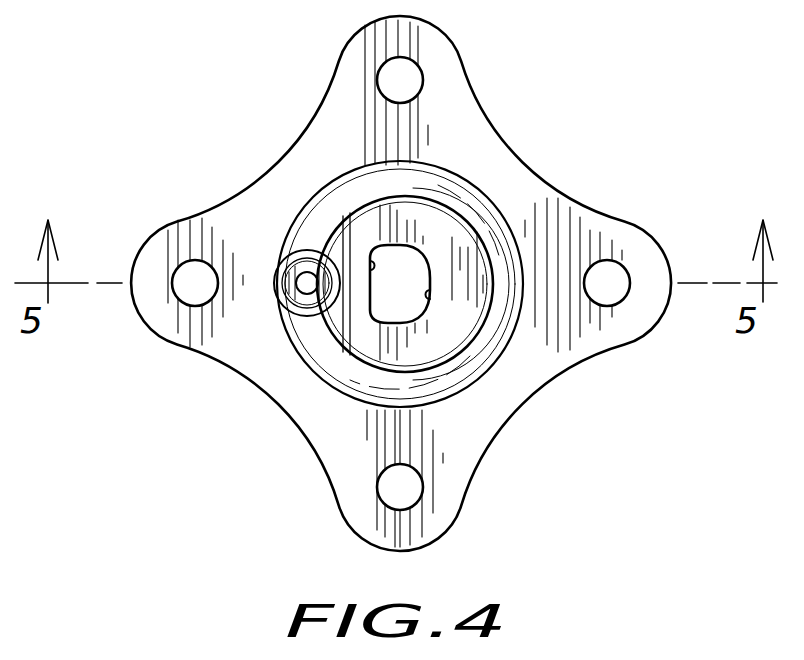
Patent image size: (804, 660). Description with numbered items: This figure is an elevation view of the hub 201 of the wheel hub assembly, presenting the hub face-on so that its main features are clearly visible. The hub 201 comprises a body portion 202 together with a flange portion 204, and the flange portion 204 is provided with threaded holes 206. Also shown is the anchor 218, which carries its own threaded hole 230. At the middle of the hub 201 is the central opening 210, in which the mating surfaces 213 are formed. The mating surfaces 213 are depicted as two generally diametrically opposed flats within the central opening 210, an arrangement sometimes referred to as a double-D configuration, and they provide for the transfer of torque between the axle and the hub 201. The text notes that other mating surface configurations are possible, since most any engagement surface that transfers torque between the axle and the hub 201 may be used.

The hub 201 is at (180, 223).
The body portion 202 is at (522, 160).
The flange portion 204 is at (467, 73).
The threaded holes 206 is at (384, 64).
The central opening 210 is at (390, 307).
The mating surfaces 213 is at (376, 250).
The anchor 218 is at (297, 313).
The threaded hole 230 is at (300, 268).